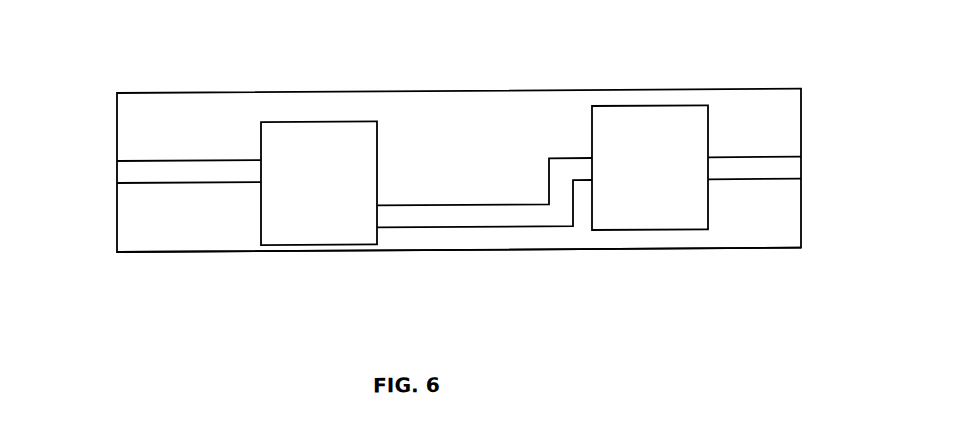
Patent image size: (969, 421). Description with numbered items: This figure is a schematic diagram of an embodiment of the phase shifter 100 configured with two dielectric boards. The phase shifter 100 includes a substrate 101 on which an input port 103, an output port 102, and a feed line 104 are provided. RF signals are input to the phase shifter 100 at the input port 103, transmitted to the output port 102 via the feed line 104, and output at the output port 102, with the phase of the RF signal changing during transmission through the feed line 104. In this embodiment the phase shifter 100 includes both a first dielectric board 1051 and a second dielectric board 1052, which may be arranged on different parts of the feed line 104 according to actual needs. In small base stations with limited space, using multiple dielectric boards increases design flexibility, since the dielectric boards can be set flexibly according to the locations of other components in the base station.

The phase shifter 100 is at (107, 54).
The substrate 101 is at (801, 105).
The output port 102 is at (801, 176).
The input port 103 is at (117, 175).
The feed line 104 is at (208, 184).
The first dielectric board 1051 is at (322, 138).
The second dielectric board 1052 is at (650, 123).